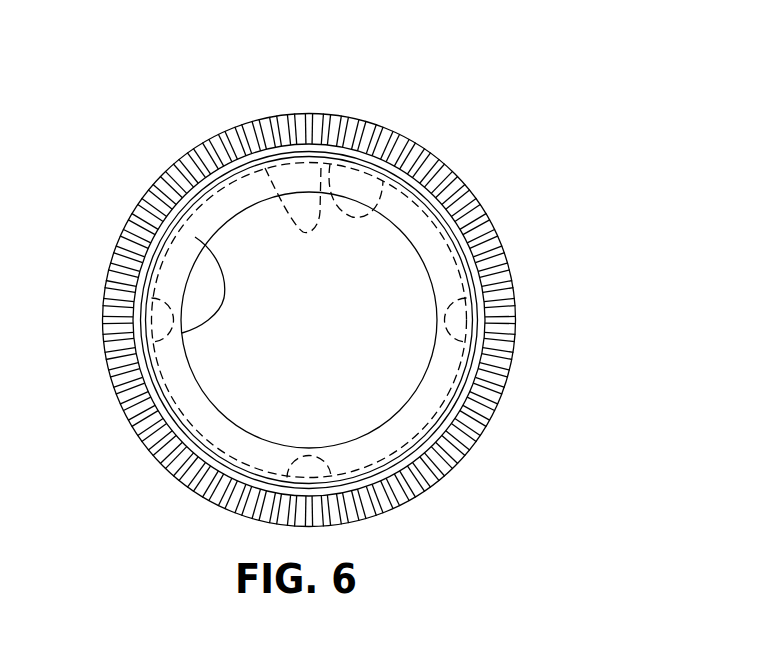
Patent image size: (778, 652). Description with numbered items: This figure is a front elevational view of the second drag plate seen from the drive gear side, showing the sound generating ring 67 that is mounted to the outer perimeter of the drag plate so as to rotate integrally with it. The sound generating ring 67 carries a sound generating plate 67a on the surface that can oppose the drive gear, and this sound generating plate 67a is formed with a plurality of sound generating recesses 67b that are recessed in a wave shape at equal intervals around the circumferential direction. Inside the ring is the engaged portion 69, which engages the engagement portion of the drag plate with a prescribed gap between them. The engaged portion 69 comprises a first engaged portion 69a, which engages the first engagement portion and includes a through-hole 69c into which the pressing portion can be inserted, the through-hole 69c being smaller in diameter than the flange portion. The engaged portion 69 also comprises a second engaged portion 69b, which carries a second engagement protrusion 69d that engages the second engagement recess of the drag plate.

The sound generating ring 67 is at (385, 306).
The sound generating plate 67a is at (511, 335).
The sound generating recesses 67b is at (480, 248).
The engaged portion 69 is at (257, 246).
The first engaged portion 69a is at (221, 243).
The second engaged portion 69b is at (265, 168).
The through-hole 69c is at (195, 237).
The second engagement protrusion 69d is at (384, 176).